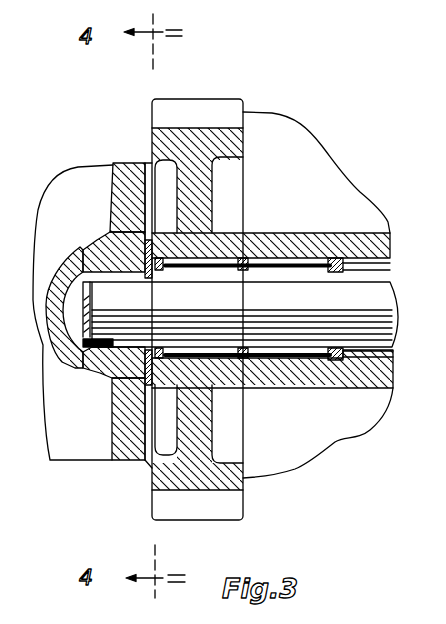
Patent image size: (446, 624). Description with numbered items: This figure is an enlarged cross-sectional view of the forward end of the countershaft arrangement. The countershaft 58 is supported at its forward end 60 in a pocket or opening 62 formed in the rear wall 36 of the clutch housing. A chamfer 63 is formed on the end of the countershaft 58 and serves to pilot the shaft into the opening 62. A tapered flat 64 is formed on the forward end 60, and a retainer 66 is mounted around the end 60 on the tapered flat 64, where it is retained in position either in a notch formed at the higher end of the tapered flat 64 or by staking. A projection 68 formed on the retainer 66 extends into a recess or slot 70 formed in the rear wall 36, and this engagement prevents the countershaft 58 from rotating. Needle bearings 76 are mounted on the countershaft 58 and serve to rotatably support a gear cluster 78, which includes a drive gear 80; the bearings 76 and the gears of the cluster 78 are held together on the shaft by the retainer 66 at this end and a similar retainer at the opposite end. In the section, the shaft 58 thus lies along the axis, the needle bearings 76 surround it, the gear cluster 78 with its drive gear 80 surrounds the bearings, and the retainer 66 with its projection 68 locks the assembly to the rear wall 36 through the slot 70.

The rear wall 36 is at (125, 178).
The countershaft 58 is at (368, 362).
The forward end 60 is at (92, 303).
The pocket or opening 62 is at (108, 348).
The chamfer 63 is at (90, 325).
The tapered flat 64 is at (87, 252).
The retainer 66 is at (147, 373).
The projection 68 is at (143, 242).
The recess or slot 70 is at (120, 238).
The needle bearings 76 is at (265, 243).
The gear cluster 78 is at (287, 199).
The drive gear 80 is at (243, 146).